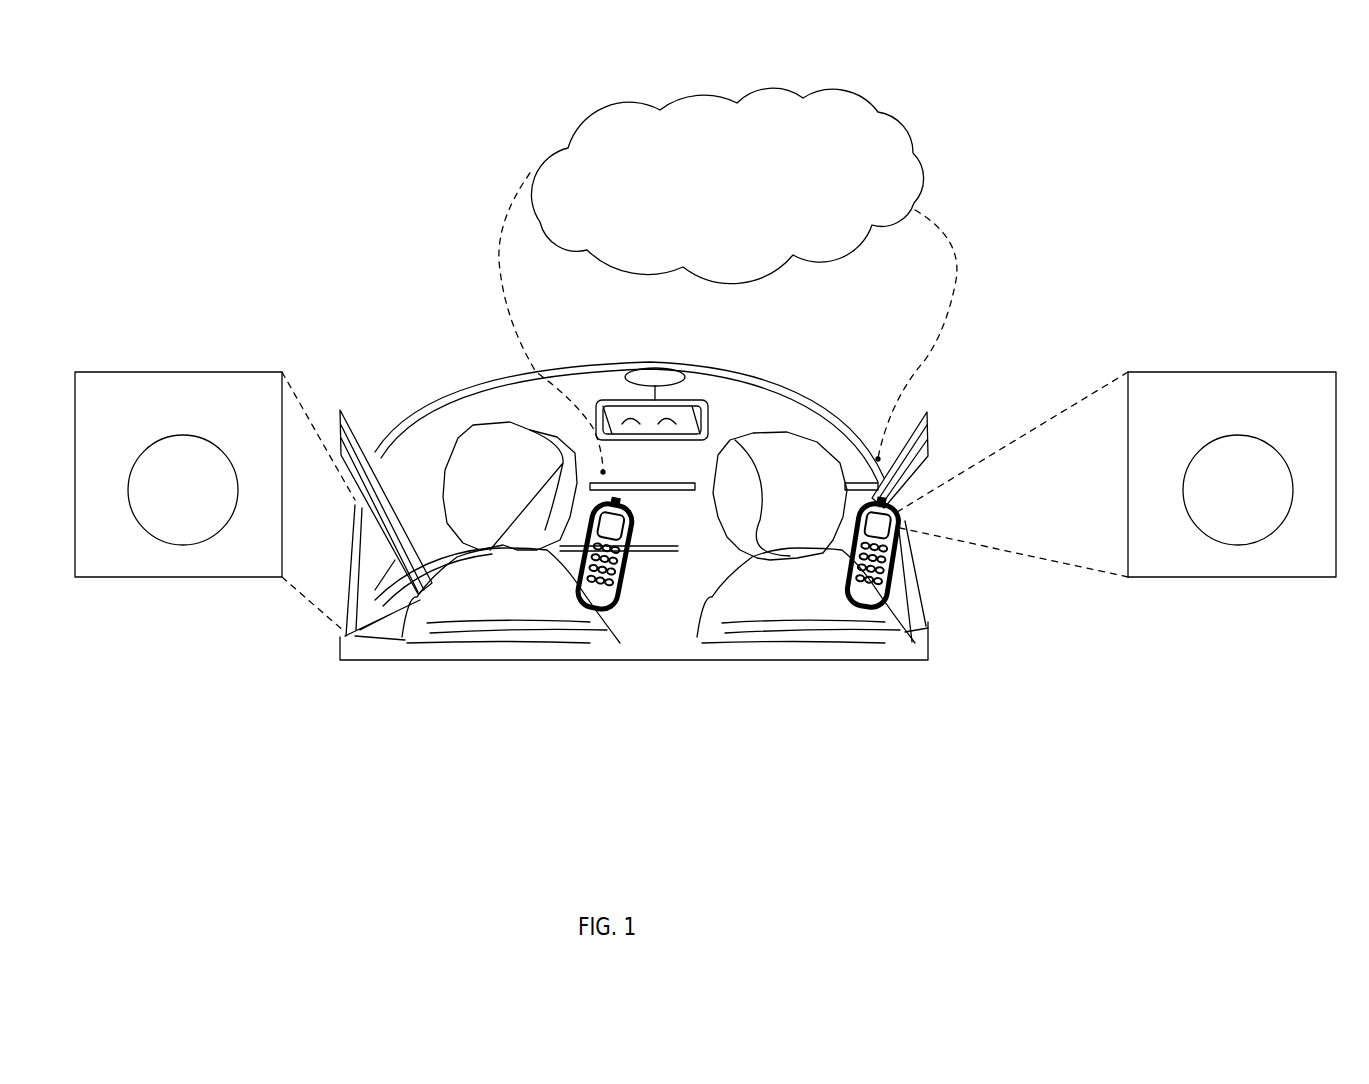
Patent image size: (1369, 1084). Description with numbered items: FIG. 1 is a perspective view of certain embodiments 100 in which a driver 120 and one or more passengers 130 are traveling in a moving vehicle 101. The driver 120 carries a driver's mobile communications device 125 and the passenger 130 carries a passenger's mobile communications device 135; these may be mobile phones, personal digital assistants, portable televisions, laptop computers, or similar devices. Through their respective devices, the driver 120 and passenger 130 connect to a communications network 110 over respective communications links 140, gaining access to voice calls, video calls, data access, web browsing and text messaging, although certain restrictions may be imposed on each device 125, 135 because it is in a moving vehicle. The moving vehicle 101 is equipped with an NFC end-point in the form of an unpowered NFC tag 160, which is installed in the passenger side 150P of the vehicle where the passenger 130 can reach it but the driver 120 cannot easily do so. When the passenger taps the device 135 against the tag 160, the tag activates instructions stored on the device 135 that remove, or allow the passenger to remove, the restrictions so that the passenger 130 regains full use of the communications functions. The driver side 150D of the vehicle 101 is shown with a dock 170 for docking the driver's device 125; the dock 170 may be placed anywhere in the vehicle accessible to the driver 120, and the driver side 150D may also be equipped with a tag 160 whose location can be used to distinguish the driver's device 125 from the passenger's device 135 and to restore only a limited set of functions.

The embodiments 100 is at (1005, 108).
The communications network 110 is at (727, 185).
The communications links 140 is at (474, 271).
The moving vehicle 101 is at (722, 676).
The driver 120 is at (396, 640).
The driver's mobile communications device 125 is at (587, 620).
The passenger 130 is at (858, 674).
The passenger's mobile communications device 135 is at (905, 585).
The driver side 150D is at (215, 502).
The dock 170 is at (183, 490).
The passenger side 150P is at (1116, 474).
The NFC end-point (NFC tag) 160 is at (1238, 490).